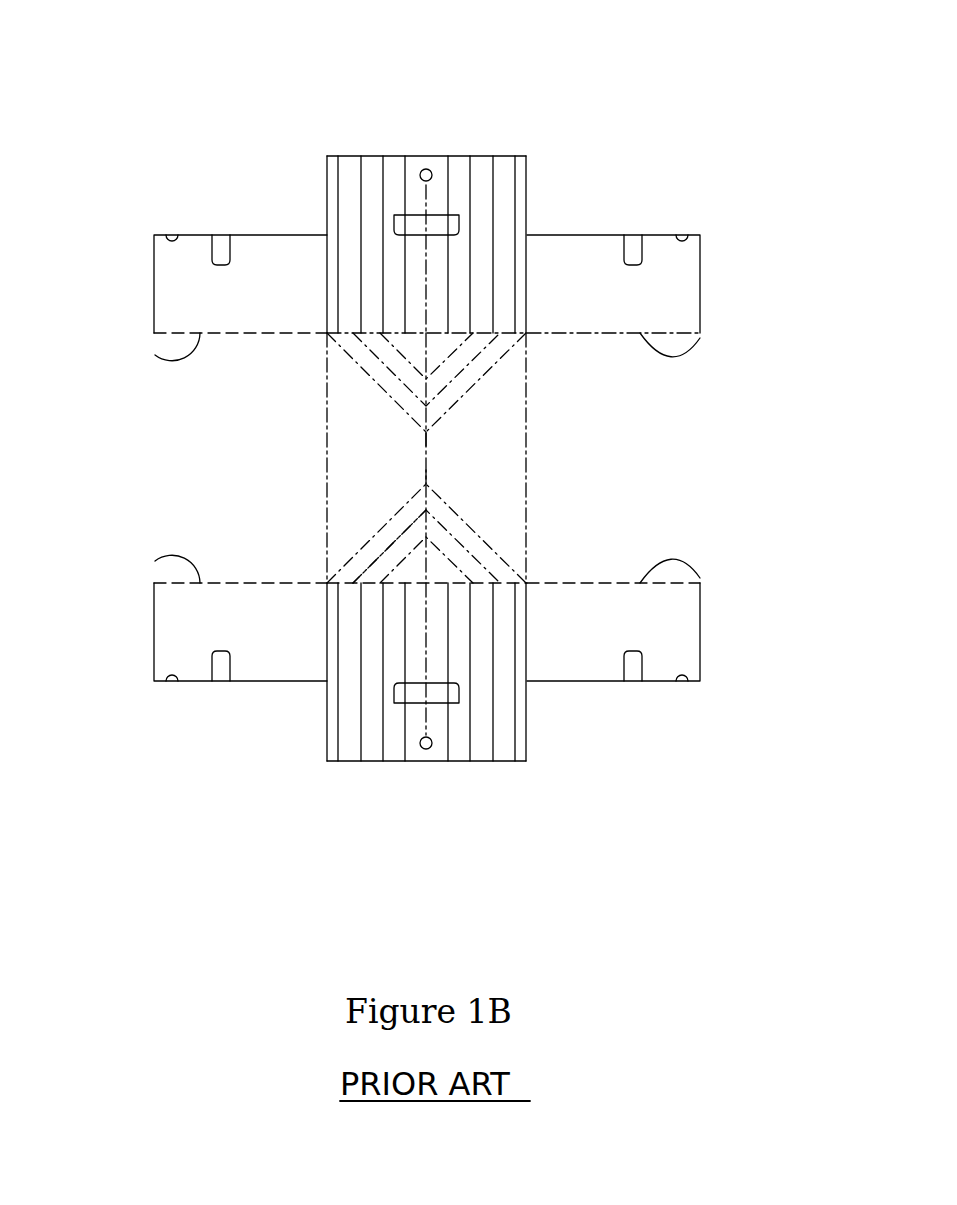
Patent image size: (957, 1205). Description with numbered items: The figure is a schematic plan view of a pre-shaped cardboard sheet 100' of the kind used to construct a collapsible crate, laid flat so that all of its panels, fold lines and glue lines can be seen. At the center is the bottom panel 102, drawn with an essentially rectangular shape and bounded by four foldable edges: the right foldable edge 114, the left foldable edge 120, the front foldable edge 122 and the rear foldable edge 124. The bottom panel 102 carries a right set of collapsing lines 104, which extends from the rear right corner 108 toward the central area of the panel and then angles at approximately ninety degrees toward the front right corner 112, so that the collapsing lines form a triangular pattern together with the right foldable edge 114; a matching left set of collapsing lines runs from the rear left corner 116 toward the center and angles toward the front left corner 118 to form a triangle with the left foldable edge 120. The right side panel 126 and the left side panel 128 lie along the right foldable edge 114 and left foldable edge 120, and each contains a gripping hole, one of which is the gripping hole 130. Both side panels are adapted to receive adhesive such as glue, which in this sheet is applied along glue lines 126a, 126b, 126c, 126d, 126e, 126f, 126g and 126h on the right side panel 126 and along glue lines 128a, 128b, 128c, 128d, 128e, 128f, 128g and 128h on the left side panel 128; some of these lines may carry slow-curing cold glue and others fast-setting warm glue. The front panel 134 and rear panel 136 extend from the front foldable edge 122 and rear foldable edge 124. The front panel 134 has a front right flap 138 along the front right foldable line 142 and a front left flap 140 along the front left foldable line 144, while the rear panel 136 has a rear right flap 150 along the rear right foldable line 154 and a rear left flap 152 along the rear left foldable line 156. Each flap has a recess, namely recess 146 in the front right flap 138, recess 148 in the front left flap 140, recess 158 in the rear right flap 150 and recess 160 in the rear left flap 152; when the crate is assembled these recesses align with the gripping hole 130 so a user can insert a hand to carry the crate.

The cardboard sheet 100' is at (346, 424).
The bottom panel 102 is at (485, 474).
The right set of collapsing lines 104 is at (382, 537).
The rear right corner 108 is at (410, 412).
The front right corner 112 is at (343, 568).
The right foldable edge 114 is at (395, 585).
The rear left corner 116 is at (510, 348).
The front left corner 118 is at (345, 350).
The left foldable edge 120 is at (392, 322).
The front foldable edge 122 is at (327, 427).
The rear foldable edge 124 is at (527, 438).
The right side panel 126 is at (407, 762).
The glue line 126a is at (515, 762).
The glue line 126b is at (490, 762).
The glue line 126c is at (472, 762).
The glue line 126d is at (447, 762).
The glue line 126e is at (418, 749).
The glue line 126f is at (385, 762).
The glue line 126g is at (360, 762).
The glue line 126h is at (337, 762).
The left side panel 128 is at (421, 170).
The glue line 128a is at (515, 157).
The glue line 128b is at (493, 157).
The glue line 128c is at (470, 157).
The glue line 128d is at (448, 157).
The glue line 128e is at (407, 157).
The glue line 128f is at (383, 157).
The glue line 128g is at (362, 157).
The glue line 128h is at (340, 157).
The gripping hole 130 is at (433, 705).
The front panel 134 is at (212, 474).
The rear panel 136 is at (640, 486).
The front right flap 138 is at (270, 629).
The front left flap 140 is at (270, 309).
The front right foldable line 142 is at (155, 561).
The front left foldable line 144 is at (155, 355).
The recess 146 is at (222, 665).
The recess 148 is at (218, 248).
The rear right flap 150 is at (638, 629).
The rear left flap 152 is at (638, 304).
The rear right foldable line 154 is at (700, 578).
The rear left foldable line 156 is at (700, 338).
The recess 158 is at (638, 665).
The recess 160 is at (638, 248).